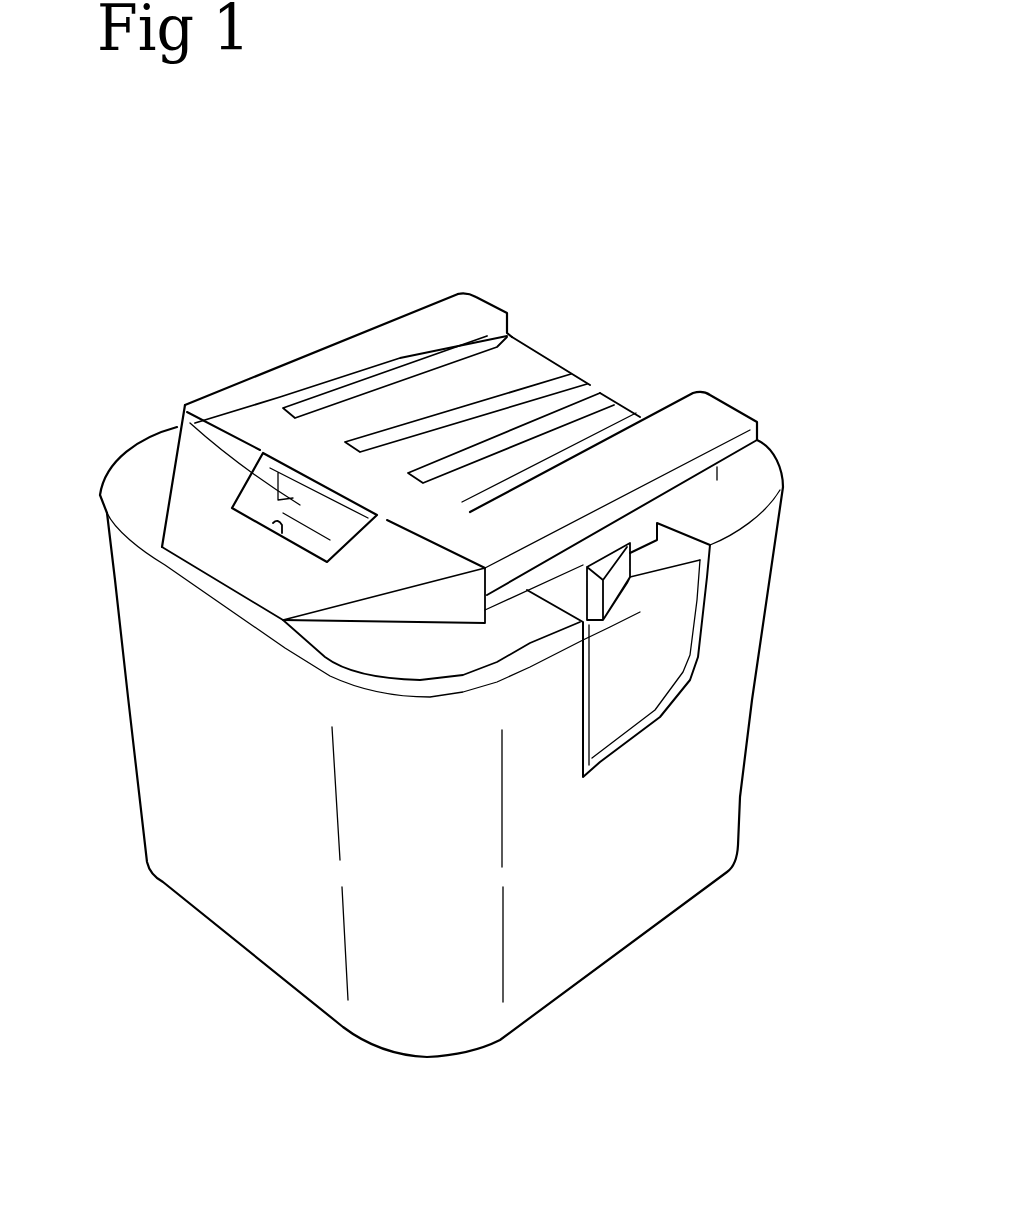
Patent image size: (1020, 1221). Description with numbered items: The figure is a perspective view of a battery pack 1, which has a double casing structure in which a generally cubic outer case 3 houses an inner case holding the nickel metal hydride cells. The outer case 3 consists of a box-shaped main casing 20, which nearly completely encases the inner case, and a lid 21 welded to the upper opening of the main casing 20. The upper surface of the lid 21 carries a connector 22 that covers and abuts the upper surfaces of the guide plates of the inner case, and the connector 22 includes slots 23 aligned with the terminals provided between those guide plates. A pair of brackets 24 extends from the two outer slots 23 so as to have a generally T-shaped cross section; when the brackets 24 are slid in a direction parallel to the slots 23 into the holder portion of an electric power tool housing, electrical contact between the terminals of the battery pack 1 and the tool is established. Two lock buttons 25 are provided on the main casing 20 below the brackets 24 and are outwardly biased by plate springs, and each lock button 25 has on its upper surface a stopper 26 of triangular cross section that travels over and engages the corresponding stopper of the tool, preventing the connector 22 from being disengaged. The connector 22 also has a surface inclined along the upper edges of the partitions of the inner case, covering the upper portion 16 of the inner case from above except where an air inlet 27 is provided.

The battery pack 1 is at (612, 342).
The outer case 3 is at (743, 797).
The upper portion 16 is at (263, 505).
The main casing 20 is at (647, 917).
The lid 21 is at (773, 488).
The connector 22 is at (240, 413).
The slots 23 is at (398, 367).
The brackets 24 is at (300, 357).
The lock buttons 25 is at (683, 647).
The stopper 26 is at (617, 588).
The air inlet 27 is at (278, 527).